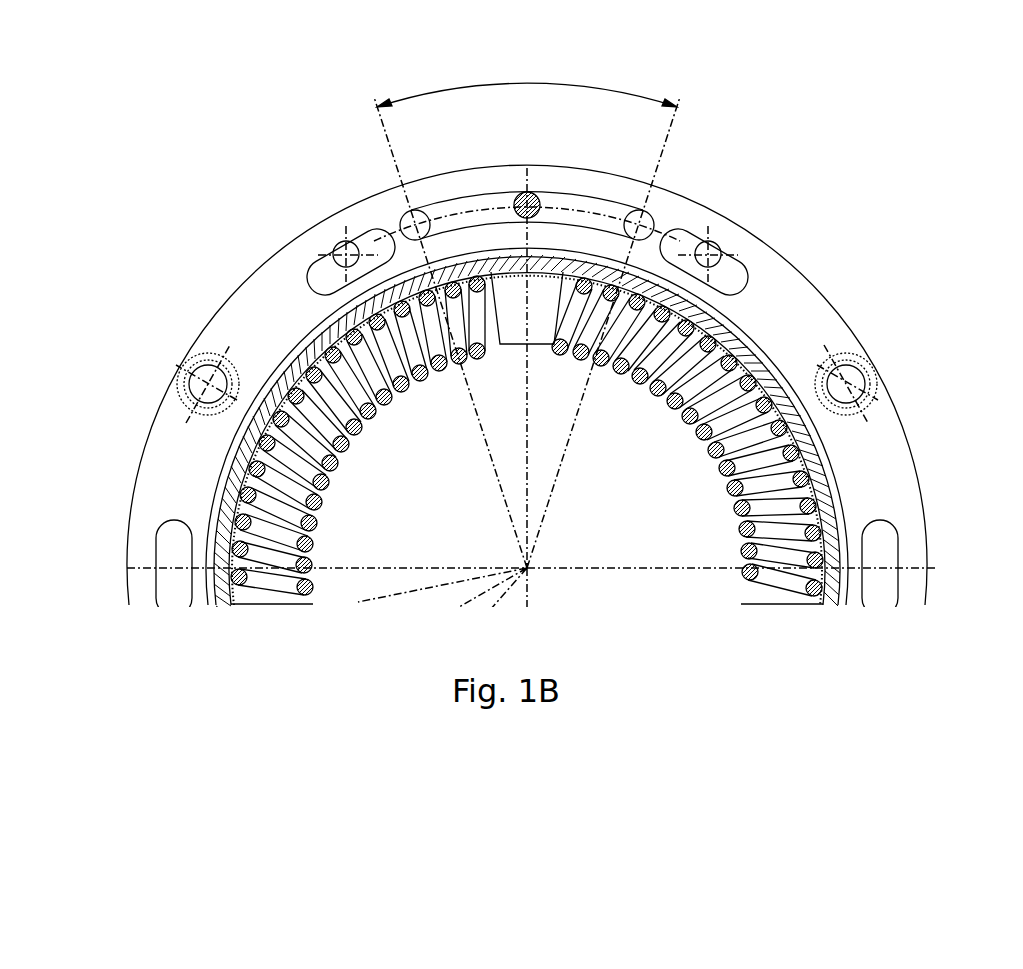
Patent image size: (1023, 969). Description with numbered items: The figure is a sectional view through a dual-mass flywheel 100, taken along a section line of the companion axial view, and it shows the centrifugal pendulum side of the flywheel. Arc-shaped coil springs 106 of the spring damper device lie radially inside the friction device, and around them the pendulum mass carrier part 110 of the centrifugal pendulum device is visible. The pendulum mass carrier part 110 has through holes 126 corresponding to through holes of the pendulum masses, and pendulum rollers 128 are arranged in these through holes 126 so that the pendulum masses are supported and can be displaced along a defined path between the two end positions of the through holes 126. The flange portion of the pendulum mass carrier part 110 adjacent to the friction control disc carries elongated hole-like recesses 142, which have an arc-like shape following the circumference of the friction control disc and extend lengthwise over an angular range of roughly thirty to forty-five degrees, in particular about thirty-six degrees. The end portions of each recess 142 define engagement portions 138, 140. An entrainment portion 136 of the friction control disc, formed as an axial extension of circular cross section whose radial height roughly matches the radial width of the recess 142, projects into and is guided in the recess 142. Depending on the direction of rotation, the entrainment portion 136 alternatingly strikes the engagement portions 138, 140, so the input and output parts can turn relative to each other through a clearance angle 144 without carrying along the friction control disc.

The dual-mass flywheel 100 is at (902, 388).
The arc-shaped coil spring 106 is at (262, 586).
The pendulum mass carrier part 110 is at (894, 463).
The through hole 126 is at (745, 288).
The pendulum roller 128 is at (716, 247).
The entrainment portion 136 is at (538, 195).
The engagement portion 138 is at (405, 213).
The engagement portion 140 is at (650, 210).
The elongated hole-like recess 142 is at (457, 205).
The clearance angle 144 is at (489, 84).